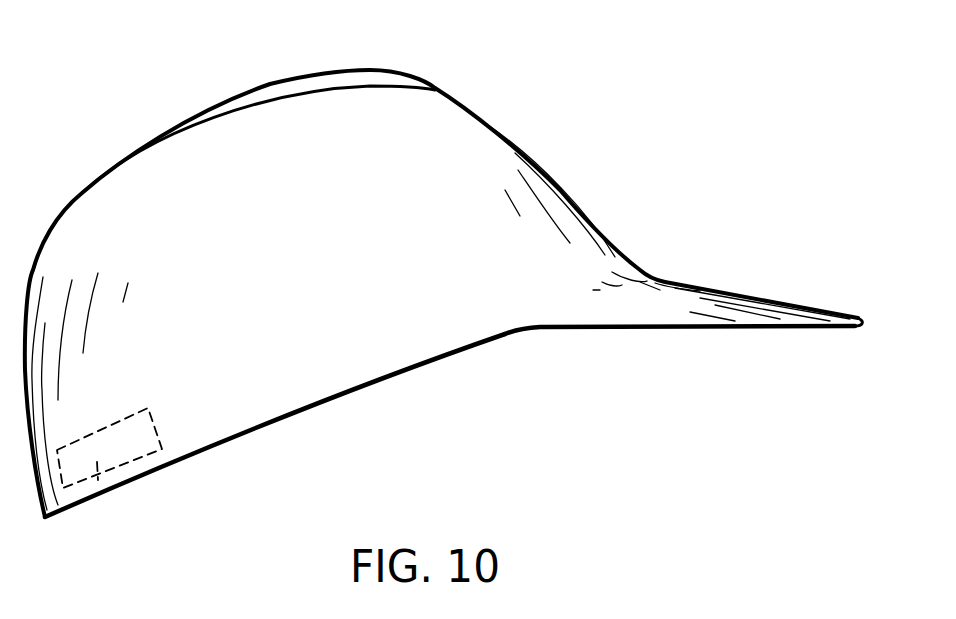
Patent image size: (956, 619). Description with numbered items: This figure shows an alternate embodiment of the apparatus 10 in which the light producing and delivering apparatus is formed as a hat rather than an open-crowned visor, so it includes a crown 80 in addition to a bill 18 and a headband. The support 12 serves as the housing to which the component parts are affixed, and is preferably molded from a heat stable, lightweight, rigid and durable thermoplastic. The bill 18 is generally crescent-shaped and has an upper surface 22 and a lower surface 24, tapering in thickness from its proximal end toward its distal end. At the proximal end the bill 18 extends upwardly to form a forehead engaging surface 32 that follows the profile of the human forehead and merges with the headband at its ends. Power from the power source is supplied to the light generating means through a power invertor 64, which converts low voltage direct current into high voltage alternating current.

The apparatus 10 is at (168, 86).
The crown 80 is at (342, 117).
The support 12 is at (372, 341).
The bill 18 is at (668, 299).
The upper surface 22 is at (770, 297).
The lower surface 24 is at (743, 328).
The forehead engaging surface 32 is at (562, 288).
The power invertor 64 is at (97, 466).